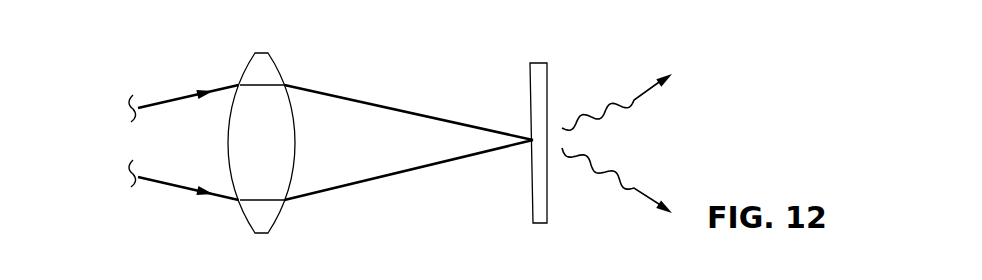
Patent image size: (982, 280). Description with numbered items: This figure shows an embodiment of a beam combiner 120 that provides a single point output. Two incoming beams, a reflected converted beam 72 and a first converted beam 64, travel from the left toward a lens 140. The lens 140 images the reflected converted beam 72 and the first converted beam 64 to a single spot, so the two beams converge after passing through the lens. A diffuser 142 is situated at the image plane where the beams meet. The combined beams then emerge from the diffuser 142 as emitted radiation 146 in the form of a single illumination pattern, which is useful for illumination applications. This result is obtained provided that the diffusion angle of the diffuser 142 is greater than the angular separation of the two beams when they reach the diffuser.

The optical detection system 120 is at (165, 54).
The reflected converted beam 72 is at (173, 103).
The first converted beam 64 is at (162, 183).
The lens 140 is at (283, 226).
The diffuser 142 is at (530, 77).
The emitted radiation 146 is at (630, 156).